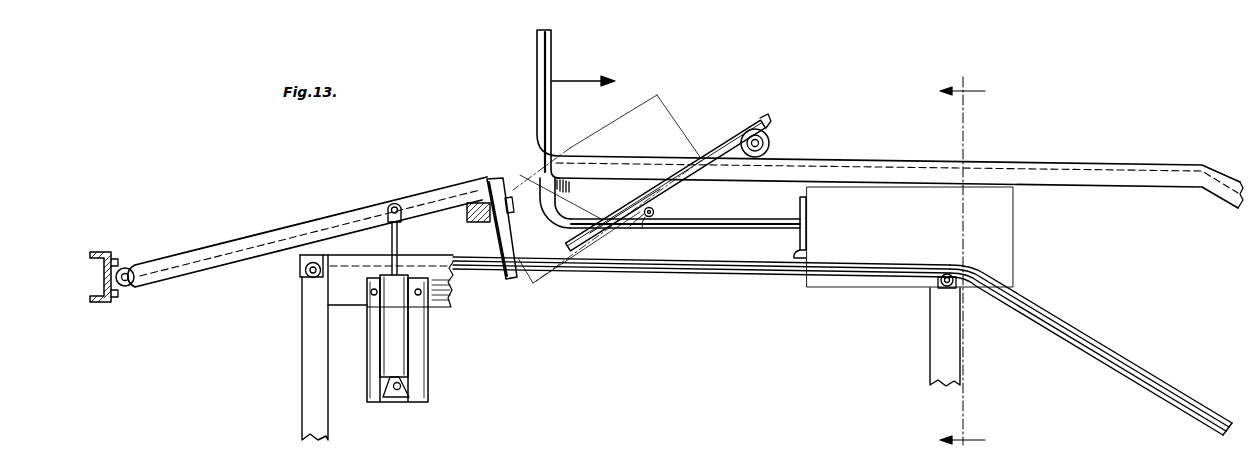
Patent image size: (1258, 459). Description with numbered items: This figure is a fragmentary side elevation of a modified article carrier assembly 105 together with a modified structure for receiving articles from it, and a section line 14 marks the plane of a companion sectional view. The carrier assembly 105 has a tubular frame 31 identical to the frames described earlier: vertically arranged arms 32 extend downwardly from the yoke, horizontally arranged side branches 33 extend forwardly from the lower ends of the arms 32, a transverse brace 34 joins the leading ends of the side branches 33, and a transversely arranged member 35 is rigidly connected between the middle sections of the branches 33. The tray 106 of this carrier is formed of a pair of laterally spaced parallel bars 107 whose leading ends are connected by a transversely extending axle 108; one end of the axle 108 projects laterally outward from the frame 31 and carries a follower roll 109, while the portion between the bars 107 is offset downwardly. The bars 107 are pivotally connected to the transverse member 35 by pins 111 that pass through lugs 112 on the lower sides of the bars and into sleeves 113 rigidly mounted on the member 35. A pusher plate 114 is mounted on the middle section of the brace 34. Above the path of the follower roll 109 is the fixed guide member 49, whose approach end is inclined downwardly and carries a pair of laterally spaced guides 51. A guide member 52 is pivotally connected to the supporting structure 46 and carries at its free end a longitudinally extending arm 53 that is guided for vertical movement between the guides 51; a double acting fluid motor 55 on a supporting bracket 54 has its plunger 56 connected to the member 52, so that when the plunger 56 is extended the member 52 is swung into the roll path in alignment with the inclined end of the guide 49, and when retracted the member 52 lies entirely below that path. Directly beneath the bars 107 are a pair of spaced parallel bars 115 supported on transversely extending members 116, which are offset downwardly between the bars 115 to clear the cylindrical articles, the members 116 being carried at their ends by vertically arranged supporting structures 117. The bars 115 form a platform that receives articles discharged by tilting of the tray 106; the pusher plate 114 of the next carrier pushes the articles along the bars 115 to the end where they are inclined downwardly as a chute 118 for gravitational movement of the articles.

The section line 14 is at (962, 259).
The tubular frame 31 is at (732, 220).
The vertically arranged arm 32 is at (552, 108).
The side branch 33 is at (704, 231).
The transverse brace 34 is at (800, 216).
The transversely arranged member 35 is at (654, 219).
The supporting structure 46 is at (104, 305).
The guide member 49 is at (903, 162).
The guide 51 is at (500, 240).
The guide member 52 is at (302, 222).
The longitudinally extending arm 53 is at (468, 212).
The supporting bracket 54 is at (429, 364).
The double acting fluid motor 55 is at (410, 335).
The plunger 56 is at (392, 236).
The carrier assembly 105 is at (552, 53).
The tray 106 is at (733, 138).
The bar 107 is at (713, 152).
The axle 108 is at (763, 136).
The follower roll 109 is at (770, 143).
The pin 111 is at (656, 213).
The lug 112 is at (650, 206).
The sleeve 113 is at (646, 219).
The pusher plate 114 is at (808, 213).
The bar 115 is at (727, 275).
The transversely extending member 116 is at (310, 280).
The supporting structure 117 is at (302, 392).
The chute 118 is at (1128, 362).